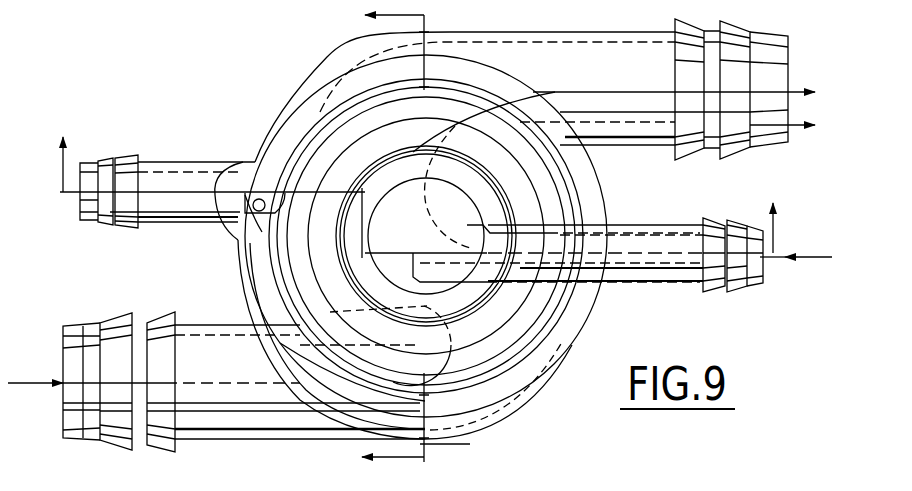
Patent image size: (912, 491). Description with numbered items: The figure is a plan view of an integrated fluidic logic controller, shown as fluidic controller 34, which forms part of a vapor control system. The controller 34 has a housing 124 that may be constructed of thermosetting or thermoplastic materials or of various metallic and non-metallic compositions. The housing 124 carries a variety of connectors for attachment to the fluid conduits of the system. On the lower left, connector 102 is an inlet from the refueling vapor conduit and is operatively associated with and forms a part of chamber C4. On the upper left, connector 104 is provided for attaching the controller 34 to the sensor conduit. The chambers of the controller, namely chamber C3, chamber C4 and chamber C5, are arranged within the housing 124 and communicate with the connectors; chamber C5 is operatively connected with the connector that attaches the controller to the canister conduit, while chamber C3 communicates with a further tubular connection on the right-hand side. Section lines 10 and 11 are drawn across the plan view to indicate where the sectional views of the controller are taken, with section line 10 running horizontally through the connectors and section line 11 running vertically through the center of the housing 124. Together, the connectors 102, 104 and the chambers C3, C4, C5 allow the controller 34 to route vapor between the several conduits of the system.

The section line 10- 10 is at (423, 197).
The section line 11- 11 is at (395, 245).
The fluidic controller 34 is at (196, 270).
The connector 102 is at (112, 448).
The connector 104 is at (112, 160).
The housing 124 is at (284, 128).
The chamber C3 is at (645, 230).
The chamber C4 is at (232, 352).
The chamber C5 is at (607, 79).